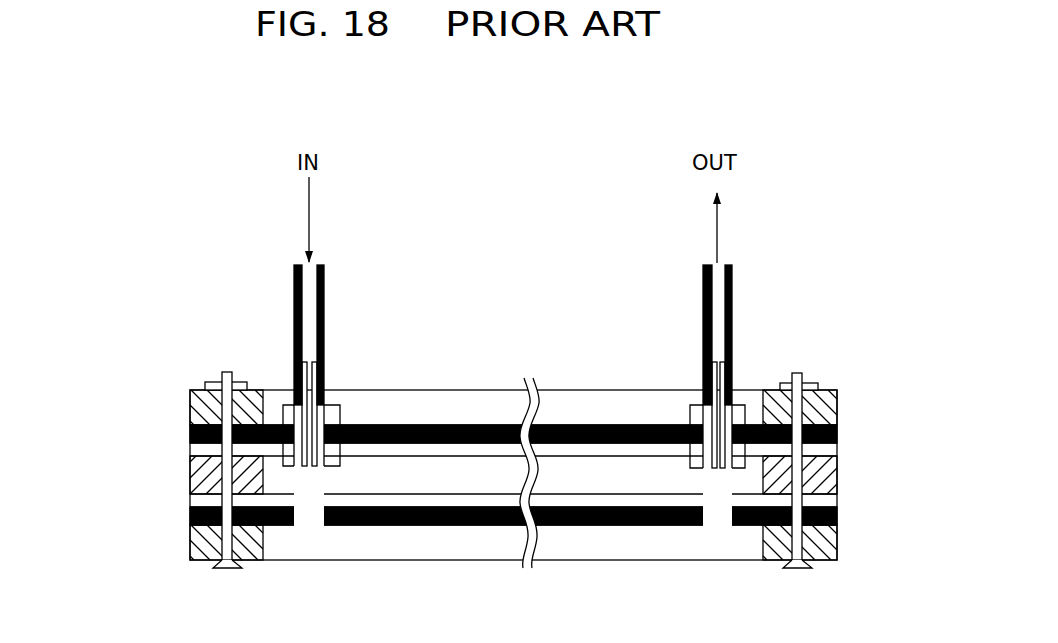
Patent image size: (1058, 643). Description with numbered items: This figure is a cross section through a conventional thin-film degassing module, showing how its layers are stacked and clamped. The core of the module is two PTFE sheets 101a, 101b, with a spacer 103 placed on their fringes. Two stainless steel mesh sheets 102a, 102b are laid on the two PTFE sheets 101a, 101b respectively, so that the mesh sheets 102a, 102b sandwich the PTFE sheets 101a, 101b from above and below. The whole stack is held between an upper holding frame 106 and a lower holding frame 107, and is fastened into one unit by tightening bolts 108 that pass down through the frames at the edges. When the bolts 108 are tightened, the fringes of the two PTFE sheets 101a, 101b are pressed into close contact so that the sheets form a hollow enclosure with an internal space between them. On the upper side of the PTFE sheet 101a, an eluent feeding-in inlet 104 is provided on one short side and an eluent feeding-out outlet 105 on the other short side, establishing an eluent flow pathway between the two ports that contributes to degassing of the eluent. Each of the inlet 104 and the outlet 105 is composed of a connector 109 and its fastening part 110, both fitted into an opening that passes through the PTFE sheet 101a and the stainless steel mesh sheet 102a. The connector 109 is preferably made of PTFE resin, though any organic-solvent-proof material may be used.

The PTFE sheet 101a is at (189, 446).
The PTFE sheet 101b is at (189, 496).
The stainless steel mesh sheet 102a is at (189, 430).
The stainless steel mesh sheet 102b is at (189, 515).
The spacer 103 is at (840, 476).
The eluent feeding-in inlet 104 is at (293, 302).
The eluent feeding-out outlet 105 is at (734, 300).
The upper holding frame 106 is at (827, 388).
The lower holding frame 107 is at (840, 544).
The tightening bolt 108 is at (225, 371).
The connector 109 is at (338, 472).
The fastening part 110 is at (339, 404).